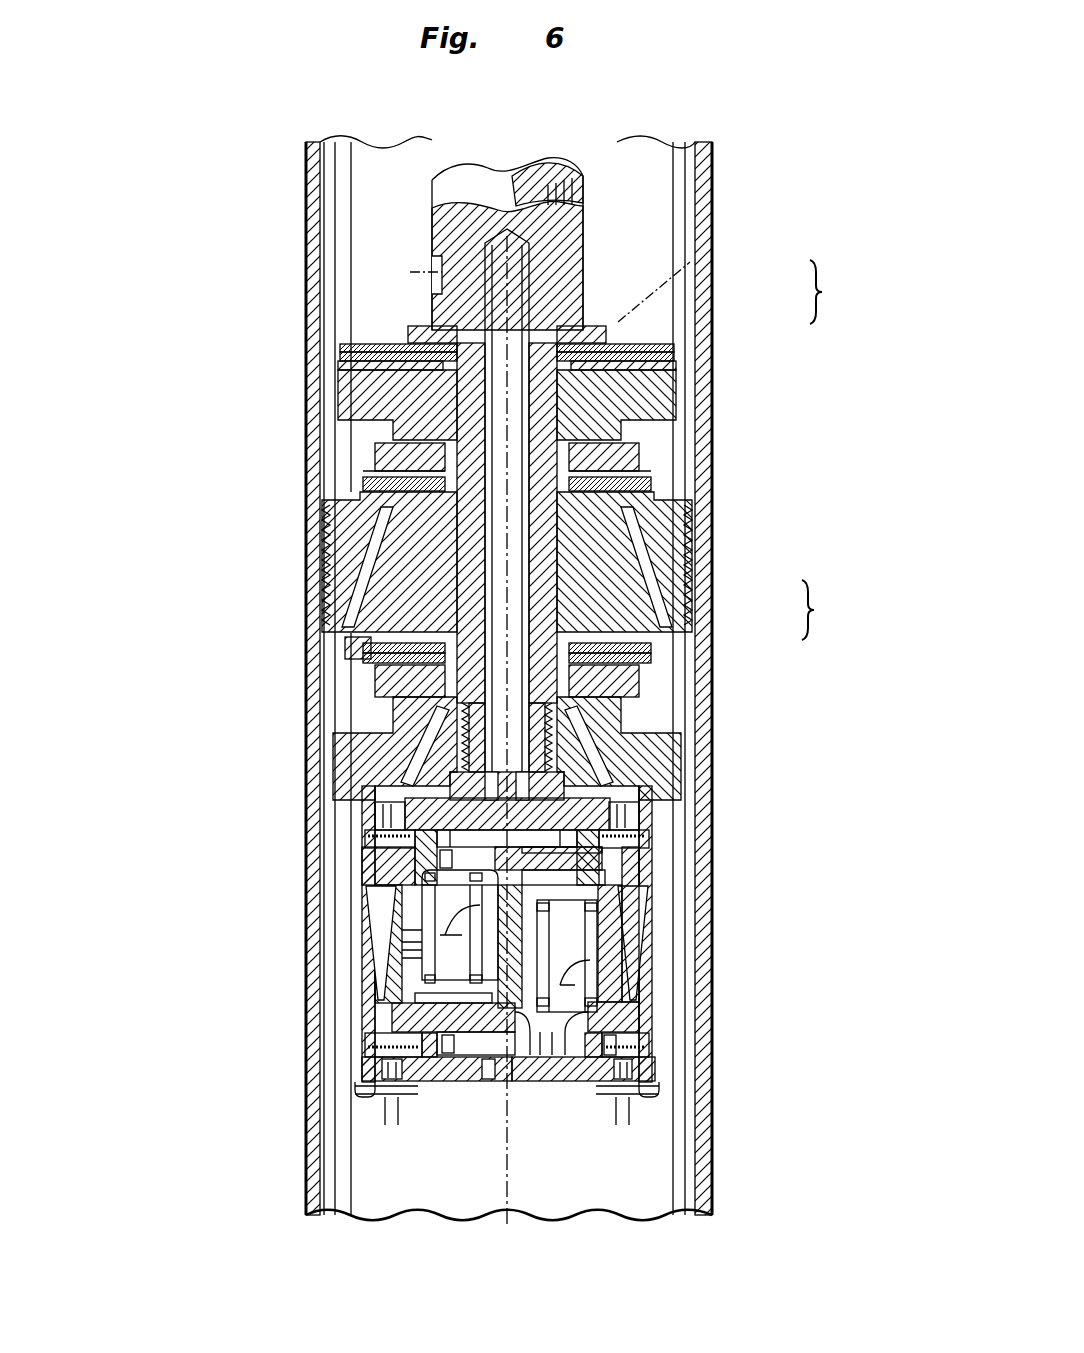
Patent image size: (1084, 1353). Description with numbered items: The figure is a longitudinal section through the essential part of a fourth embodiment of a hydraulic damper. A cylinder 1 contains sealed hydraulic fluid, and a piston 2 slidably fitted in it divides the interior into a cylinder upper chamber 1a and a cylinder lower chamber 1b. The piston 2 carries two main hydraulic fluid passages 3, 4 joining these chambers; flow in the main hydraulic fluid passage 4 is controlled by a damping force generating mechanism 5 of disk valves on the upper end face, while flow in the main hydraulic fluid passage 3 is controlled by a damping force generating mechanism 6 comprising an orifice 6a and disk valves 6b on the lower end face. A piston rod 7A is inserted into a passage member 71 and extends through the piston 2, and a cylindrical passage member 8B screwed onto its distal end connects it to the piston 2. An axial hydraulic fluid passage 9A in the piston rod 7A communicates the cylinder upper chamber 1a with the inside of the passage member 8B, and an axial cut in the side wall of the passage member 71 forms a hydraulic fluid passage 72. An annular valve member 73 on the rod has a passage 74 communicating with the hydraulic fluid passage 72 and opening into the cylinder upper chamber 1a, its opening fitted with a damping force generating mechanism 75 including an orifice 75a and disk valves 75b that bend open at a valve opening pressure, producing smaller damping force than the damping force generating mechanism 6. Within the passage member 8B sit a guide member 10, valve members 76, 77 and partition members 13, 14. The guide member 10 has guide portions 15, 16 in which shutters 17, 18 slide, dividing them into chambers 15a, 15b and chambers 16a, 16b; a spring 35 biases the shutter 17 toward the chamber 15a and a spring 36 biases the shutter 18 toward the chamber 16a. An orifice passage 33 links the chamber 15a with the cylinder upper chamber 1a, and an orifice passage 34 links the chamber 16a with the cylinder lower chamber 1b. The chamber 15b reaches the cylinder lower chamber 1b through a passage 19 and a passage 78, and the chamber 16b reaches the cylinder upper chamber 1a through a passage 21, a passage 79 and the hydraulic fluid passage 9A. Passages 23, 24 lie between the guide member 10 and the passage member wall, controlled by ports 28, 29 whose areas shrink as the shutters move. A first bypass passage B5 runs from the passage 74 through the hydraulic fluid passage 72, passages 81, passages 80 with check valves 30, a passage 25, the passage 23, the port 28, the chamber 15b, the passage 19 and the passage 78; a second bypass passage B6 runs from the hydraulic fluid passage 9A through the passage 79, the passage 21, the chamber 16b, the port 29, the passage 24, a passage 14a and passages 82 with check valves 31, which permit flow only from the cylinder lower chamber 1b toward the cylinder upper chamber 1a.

The cylinder 1 is at (706, 166).
The cylinder upper chamber 1a is at (640, 172).
The cylinder lower chamber 1b is at (601, 1190).
The piston 2 is at (690, 528).
The main hydraulic fluid passage 3 is at (652, 465).
The main hydraulic fluid passage 4 is at (358, 650).
The damping force generating mechanism 5 is at (363, 484).
The damping force generating mechanism 6 is at (820, 610).
The orifice 6a is at (655, 645).
The disk valves 6b is at (655, 660).
The piston rod 7A is at (472, 180).
The passage member 8B is at (684, 753).
The hydraulic fluid passage 9A is at (515, 270).
The guide member 10 is at (656, 966).
The partition member 13 is at (380, 886).
The partition member 14 is at (385, 1045).
The passage 14a is at (380, 1070).
The guide portion 15 is at (597, 930).
The chamber 15a is at (585, 878).
The chamber 15b is at (600, 1038).
The guide portion 16 is at (450, 992).
The chamber 16a is at (455, 1003).
The chamber 16b is at (422, 912).
The shutter 17 is at (627, 945).
The shutter 18 is at (422, 970).
The passage 19 is at (633, 1058).
The passage 21 is at (372, 792).
The passage 23 is at (625, 1045).
The passage 24 is at (420, 1010).
The passage 25 is at (602, 858).
The port 28 is at (600, 1010).
The port 29 is at (402, 950).
The check valves 30 is at (380, 845).
The check valves 31 is at (372, 1094).
The orifice passage 33 is at (605, 872).
The orifice passage 34 is at (518, 1084).
The spring 35 is at (600, 1078).
The spring 36 is at (437, 862).
The passage member 71 is at (370, 580).
The hydraulic fluid passage 72 is at (570, 595).
The valve member 73 is at (662, 406).
The passage 74 is at (600, 405).
The damping force generating mechanism 75 is at (838, 292).
The orifice 75a is at (640, 352).
The disk valves 75b is at (662, 330).
The valve member 76 is at (578, 846).
The valve member 77 is at (556, 1056).
The passage 78 is at (497, 1056).
The passage 79 is at (395, 722).
The passages 80 is at (385, 818).
The passages 81 is at (405, 762).
The passages 82 is at (392, 1125).
The first bypass passage B5 is at (690, 268).
The second bypass passage B6 is at (432, 272).